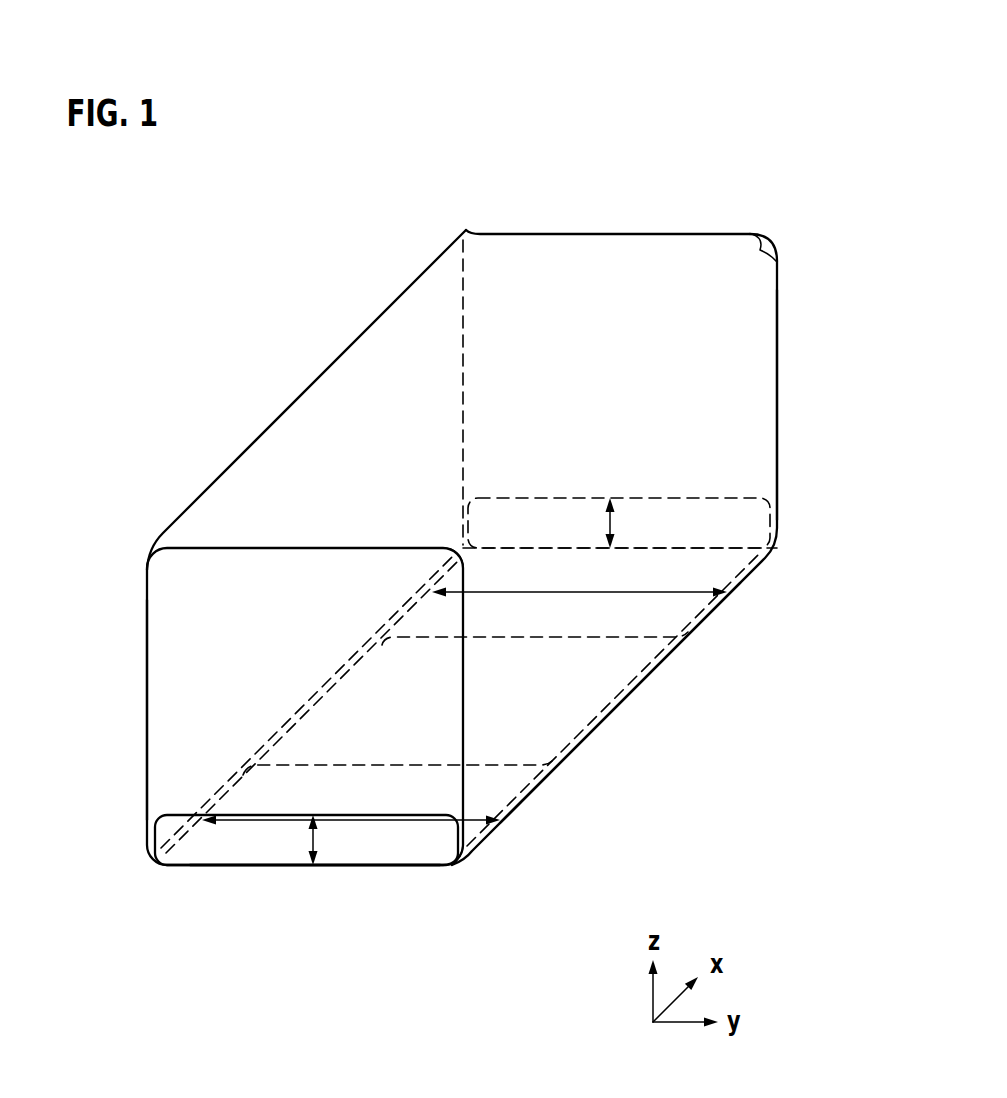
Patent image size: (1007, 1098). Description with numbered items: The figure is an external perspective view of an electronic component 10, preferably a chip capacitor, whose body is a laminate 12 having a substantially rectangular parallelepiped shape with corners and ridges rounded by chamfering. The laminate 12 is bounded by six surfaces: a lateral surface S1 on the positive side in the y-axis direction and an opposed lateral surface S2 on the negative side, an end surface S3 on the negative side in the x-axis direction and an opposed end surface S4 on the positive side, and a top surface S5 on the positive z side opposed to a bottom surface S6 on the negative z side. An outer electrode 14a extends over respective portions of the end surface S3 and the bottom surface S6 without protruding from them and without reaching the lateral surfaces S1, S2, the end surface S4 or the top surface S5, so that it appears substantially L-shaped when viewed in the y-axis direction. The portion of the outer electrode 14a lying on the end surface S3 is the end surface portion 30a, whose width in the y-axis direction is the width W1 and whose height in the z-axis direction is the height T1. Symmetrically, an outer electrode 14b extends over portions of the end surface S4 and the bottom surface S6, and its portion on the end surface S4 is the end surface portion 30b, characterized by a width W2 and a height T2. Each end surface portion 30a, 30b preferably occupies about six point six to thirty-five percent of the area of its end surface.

The electronic component 10 is at (272, 204).
The laminate 12 is at (648, 210).
The outer electrode 14a is at (507, 793).
The outer electrode 14b is at (690, 605).
The end surface portion 30a is at (430, 842).
The end surface portion 30b is at (687, 517).
The lateral surface S1 is at (610, 622).
The lateral surface S2 is at (290, 467).
The end surface S3 is at (307, 750).
The end surface S4 is at (678, 268).
The top surface S5 is at (392, 403).
The bottom surface S6 is at (557, 700).
The height T1 is at (296, 840).
The height T2 is at (591, 523).
The width W1 is at (351, 838).
The width W2 is at (579, 575).